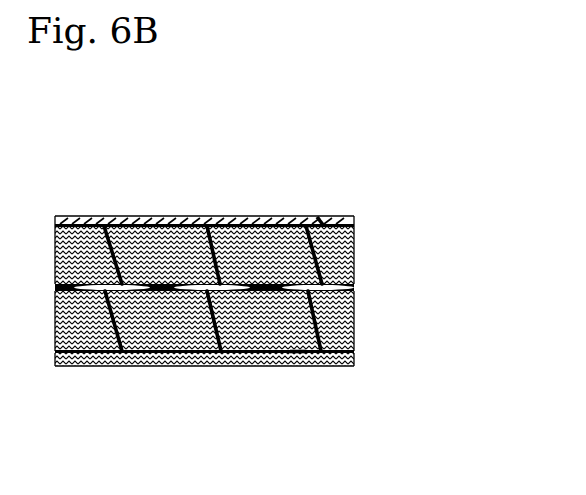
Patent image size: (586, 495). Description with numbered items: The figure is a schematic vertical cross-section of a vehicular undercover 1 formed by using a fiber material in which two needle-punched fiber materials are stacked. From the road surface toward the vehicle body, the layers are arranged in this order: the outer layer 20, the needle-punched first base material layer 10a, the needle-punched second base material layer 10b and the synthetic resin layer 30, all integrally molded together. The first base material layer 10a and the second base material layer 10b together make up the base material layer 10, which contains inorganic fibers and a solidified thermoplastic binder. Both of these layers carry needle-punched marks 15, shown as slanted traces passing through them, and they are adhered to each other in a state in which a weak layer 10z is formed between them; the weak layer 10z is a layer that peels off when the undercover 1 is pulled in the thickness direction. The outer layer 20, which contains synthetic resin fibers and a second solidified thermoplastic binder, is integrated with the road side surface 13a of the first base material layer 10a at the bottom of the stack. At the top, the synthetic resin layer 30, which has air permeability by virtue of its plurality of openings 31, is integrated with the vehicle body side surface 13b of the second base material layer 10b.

The vehicular undercover 1 is at (87, 115).
The base material layer 10 is at (272, 289).
The first base material layer 10a is at (245, 321).
The second base material layer 10b is at (352, 255).
The weak layer 10z is at (352, 287).
The road side surface 13a is at (298, 352).
The vehicle body side surface 13b is at (331, 216).
The needle-punched marks 15 is at (221, 216).
The outer layer 20 is at (352, 355).
The synthetic resin layer 30 is at (239, 197).
The openings 31 is at (133, 216).